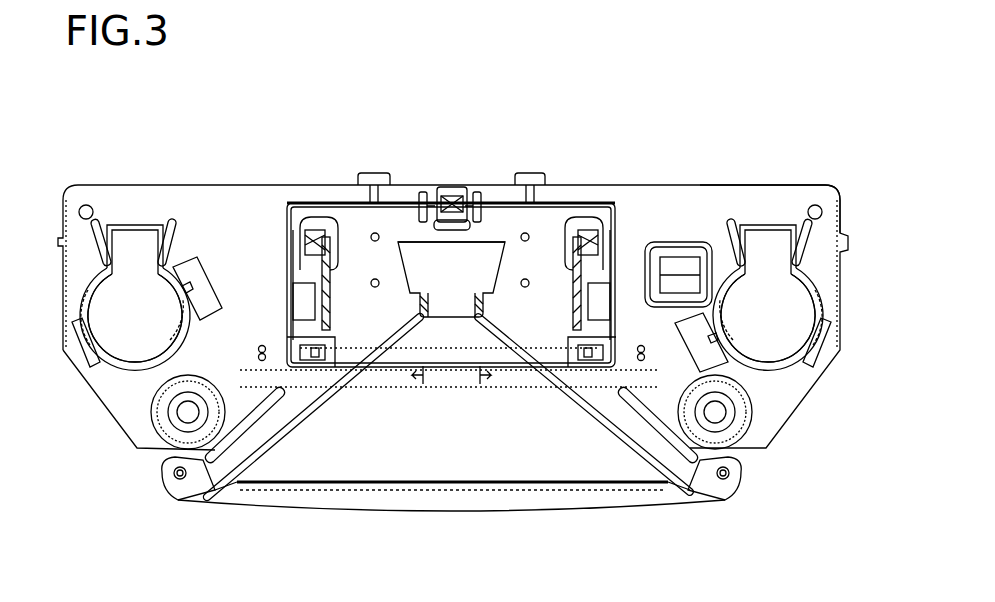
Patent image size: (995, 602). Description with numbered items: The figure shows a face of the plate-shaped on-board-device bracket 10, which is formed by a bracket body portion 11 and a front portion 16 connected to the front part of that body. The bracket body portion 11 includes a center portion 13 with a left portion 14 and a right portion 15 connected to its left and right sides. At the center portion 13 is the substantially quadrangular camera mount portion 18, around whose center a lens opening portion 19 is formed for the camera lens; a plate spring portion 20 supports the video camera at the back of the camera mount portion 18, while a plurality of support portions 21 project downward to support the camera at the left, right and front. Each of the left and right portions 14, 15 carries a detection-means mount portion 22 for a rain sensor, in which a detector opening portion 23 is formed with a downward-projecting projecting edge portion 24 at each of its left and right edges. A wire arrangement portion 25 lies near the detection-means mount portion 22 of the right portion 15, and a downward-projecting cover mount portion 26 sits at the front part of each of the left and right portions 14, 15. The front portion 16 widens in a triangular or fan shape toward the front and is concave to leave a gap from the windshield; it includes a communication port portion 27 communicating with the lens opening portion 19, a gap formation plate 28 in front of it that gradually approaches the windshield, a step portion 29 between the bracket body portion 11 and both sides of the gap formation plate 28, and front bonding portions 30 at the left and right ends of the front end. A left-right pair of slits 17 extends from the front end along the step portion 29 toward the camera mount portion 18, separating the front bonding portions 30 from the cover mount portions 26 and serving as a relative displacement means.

The on-board-device bracket 10 is at (108, 150).
The bracket body portion 11 is at (237, 180).
The center portion 13 is at (418, 212).
The left portion 14 is at (713, 210).
The right portion 15 is at (193, 236).
The front portion 16 is at (312, 512).
The slits 17 is at (207, 457).
The camera mount portion 18 is at (338, 202).
The lens opening portion 19 is at (455, 302).
The plate spring portion 20 is at (460, 258).
The support portions 21 is at (322, 212).
The detection-means mount portion 22 is at (66, 323).
The detector opening portion 23 is at (122, 327).
The projecting edge portion 24 is at (82, 282).
The wire arrangement portion 25 is at (683, 245).
The cover mount portion 26 is at (168, 422).
The communication port portion 27 is at (482, 232).
The gap formation plate 28 is at (450, 427).
The step portion 29 is at (303, 410).
The front bonding portions 30 is at (177, 492).